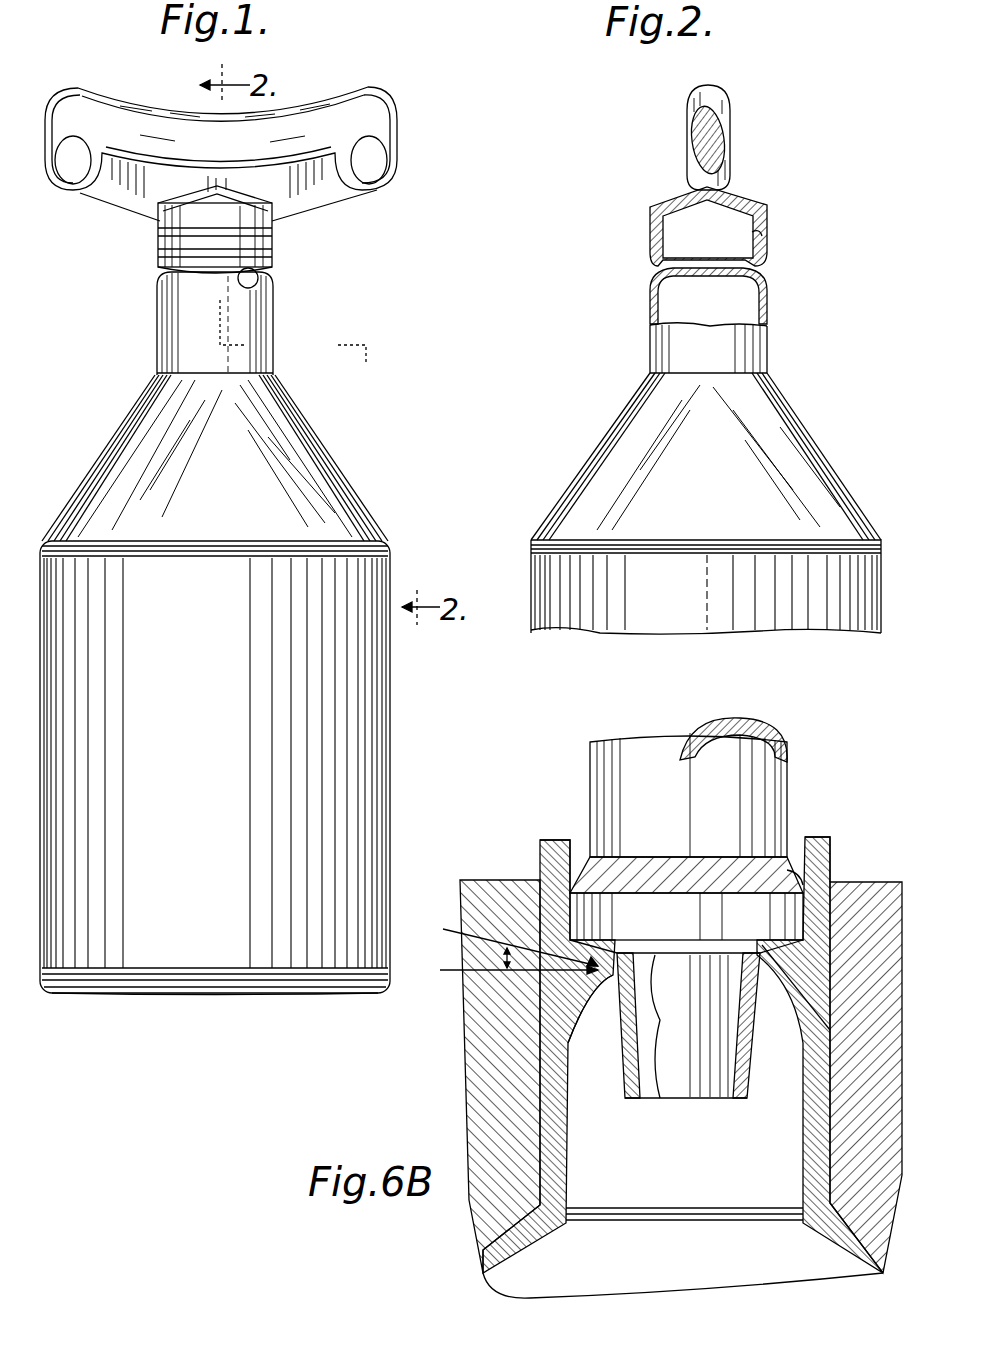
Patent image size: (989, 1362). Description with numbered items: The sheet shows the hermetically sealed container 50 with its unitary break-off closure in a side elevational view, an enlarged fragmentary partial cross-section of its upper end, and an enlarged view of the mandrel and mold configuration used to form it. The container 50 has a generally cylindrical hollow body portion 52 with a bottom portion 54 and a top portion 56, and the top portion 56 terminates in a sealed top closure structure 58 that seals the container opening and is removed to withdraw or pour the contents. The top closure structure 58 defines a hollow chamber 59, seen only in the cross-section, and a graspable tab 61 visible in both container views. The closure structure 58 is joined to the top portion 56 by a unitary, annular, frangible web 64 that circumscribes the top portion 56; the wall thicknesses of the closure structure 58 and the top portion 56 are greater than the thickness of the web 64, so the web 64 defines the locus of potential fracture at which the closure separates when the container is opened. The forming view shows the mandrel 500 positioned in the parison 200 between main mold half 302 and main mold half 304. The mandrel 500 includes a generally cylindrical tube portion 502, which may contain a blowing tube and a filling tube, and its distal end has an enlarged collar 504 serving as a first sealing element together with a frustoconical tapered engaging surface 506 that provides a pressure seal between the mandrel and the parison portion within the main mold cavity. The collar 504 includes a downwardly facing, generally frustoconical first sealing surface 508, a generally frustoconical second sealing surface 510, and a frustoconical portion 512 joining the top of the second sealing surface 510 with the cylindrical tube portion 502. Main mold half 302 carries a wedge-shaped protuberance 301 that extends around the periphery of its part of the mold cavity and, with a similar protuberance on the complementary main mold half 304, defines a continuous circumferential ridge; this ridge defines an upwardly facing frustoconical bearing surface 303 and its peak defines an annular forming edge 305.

In FIG. 1, the hermetically sealed container 50 is at (410, 718).
In FIG. 1, the hollow body portion 52 is at (372, 652).
In FIG. 2, the hollow body portion 52 is at (552, 570).
In FIG. 1, the bottom portion 54 is at (183, 997).
In FIG. 1, the top portion 56 is at (160, 352).
In FIG. 2, the top portion 56 is at (752, 347).
In FIG. 6B, the top portion 56 is at (556, 1142).
In FIG. 1, the top closure structure 58 is at (278, 227).
In FIG. 2, the top closure structure 58 is at (775, 236).
In FIG. 2, the hollow chamber 59 is at (755, 212).
In FIG. 1, the graspable tab 61 is at (332, 192).
In FIG. 2, the graspable tab 61 is at (740, 134).
In FIG. 1, the frangible web 64 is at (258, 282).
In FIG. 2, the frangible web 64 is at (732, 272).
In FIG. 6B, the parison 200 is at (562, 842).
In FIG. 6B, the protuberance 301 is at (580, 1026).
In FIG. 6B, the main mold half 302 is at (466, 1045).
In FIG. 6B, the frustoconical bearing surface 303 is at (560, 958).
In FIG. 6B, the main mold half 304 is at (872, 880).
In FIG. 6B, the annular forming edge 305 is at (595, 970).
In FIG. 6B, the mandrel 500 is at (711, 908).
In FIG. 6B, the cylindrical tube portion 502 is at (612, 771).
In FIG. 6B, the enlarged collar 504 is at (656, 900).
In FIG. 6B, the tapered engaging surface 506 is at (668, 1025).
In FIG. 6B, the first sealing surface 508 is at (735, 958).
In FIG. 6B, the second sealing surface 510 is at (792, 892).
In FIG. 6B, the frustoconical portion 512 is at (612, 872).